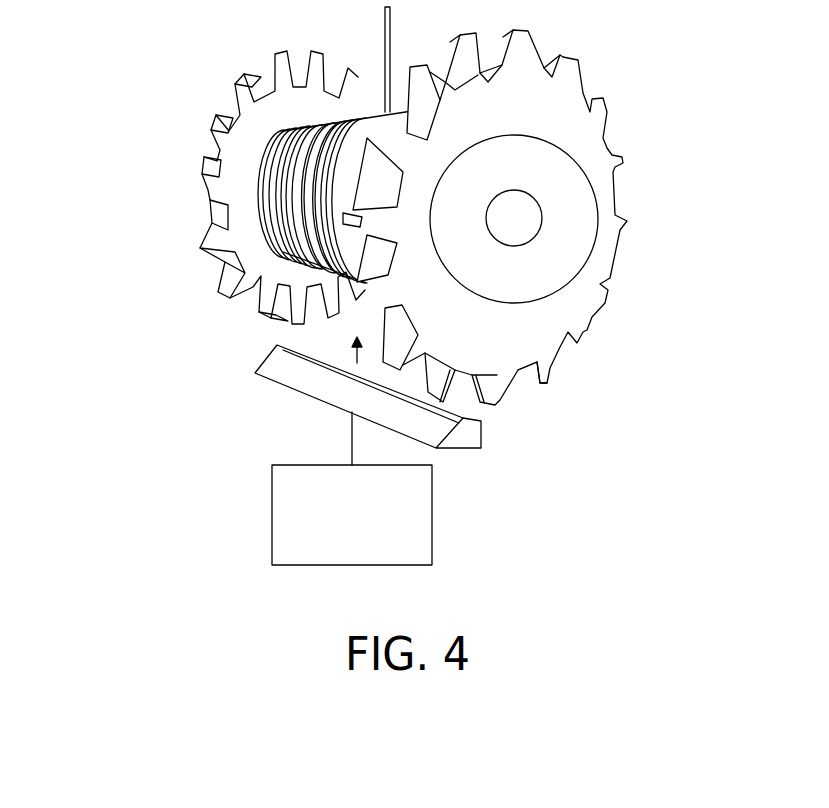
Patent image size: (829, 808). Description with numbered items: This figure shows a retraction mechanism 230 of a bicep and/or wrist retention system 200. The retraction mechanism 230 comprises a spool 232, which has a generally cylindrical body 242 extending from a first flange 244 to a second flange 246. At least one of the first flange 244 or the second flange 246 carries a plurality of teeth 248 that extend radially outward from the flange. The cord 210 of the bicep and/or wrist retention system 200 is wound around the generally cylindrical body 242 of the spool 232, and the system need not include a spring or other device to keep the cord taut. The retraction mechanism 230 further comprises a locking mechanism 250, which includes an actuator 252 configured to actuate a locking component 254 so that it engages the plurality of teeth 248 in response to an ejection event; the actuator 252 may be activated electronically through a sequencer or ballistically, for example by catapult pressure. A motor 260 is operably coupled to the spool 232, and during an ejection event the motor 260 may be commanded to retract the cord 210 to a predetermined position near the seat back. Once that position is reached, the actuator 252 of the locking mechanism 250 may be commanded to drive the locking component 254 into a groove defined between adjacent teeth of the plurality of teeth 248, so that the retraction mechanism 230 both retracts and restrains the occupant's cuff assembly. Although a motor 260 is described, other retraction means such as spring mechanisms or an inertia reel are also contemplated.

The bicep and/or wrist retention system 200 is at (386, 227).
The cord 210 is at (388, 47).
The retraction mechanism 230 is at (394, 227).
The spool 232 is at (535, 158).
The generally cylindrical body 242 is at (293, 197).
The first flange 244 is at (233, 119).
The second flange 246 is at (544, 227).
The plurality of teeth 248 is at (540, 380).
The locking mechanism 250 is at (370, 455).
The actuator 252 is at (293, 395).
The locking component 254 is at (437, 428).
The motor 260 is at (527, 237).